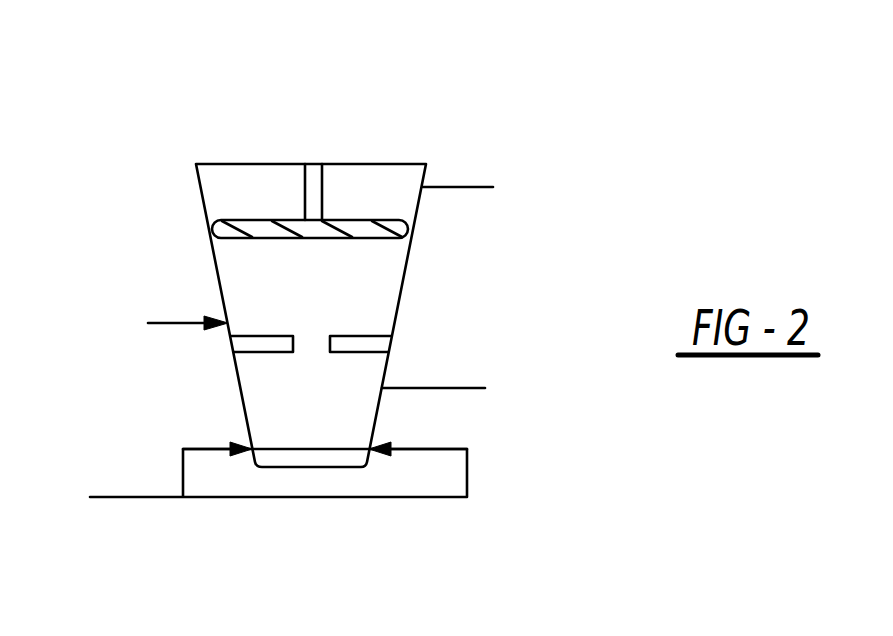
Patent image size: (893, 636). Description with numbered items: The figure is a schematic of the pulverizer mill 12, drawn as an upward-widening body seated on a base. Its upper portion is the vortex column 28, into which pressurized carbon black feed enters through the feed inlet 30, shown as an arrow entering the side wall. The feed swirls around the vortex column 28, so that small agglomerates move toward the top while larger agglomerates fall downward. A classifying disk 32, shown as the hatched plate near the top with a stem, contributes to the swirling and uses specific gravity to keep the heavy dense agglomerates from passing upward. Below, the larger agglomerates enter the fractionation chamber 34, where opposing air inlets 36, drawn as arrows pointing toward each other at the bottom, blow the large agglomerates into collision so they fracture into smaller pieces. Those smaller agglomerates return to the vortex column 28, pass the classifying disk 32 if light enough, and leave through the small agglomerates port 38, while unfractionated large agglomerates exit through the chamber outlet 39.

The pulverizer mill 12 is at (143, 86).
The vortex column 28 is at (232, 226).
The feed inlet 30 is at (226, 319).
The classifying disk 32 is at (323, 187).
The fractionation chamber 34 is at (242, 397).
The opposing air inlets 36 is at (250, 497).
The small agglomerates port 38 is at (423, 184).
The lower wall portion 39 is at (382, 388).